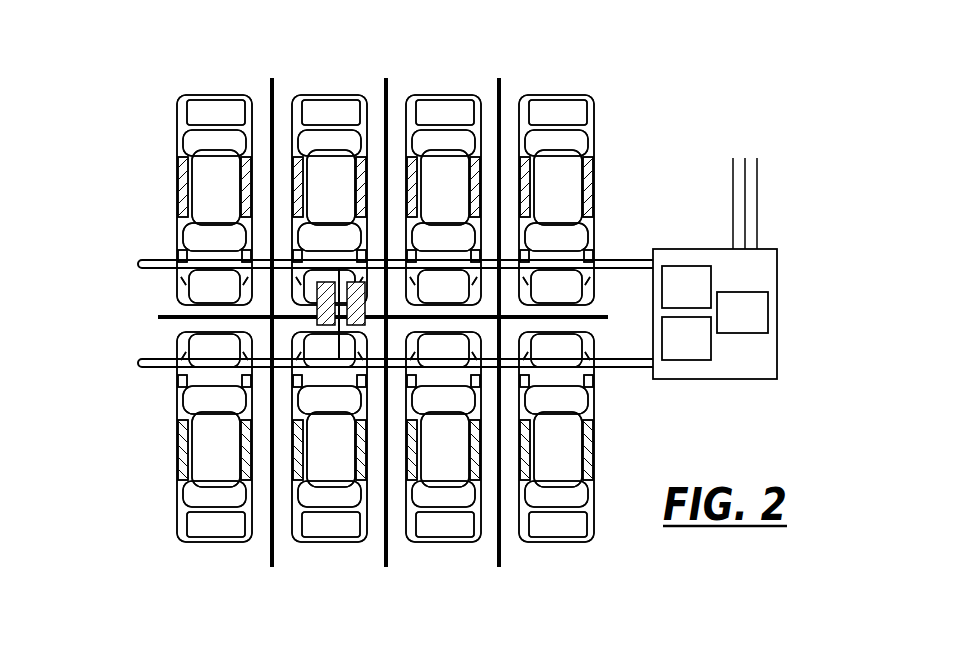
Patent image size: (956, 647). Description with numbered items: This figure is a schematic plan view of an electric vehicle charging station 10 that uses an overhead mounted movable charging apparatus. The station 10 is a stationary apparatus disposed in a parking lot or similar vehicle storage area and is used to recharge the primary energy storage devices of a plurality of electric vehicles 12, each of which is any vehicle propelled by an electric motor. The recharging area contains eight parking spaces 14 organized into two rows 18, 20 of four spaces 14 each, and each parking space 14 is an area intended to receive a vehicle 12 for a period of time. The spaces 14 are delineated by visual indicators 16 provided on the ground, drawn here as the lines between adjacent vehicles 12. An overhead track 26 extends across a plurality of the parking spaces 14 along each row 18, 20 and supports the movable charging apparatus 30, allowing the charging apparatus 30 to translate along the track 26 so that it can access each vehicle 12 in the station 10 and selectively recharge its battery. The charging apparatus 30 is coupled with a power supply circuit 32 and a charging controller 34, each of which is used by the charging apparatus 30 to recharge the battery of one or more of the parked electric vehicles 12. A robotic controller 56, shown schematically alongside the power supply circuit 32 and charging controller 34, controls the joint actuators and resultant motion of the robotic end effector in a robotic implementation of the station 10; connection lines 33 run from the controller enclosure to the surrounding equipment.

The electric vehicle charging station 10 is at (100, 70).
The electric vehicle 12 is at (206, 194).
The vehicle parking space 14 is at (224, 84).
The visual indicator 16 is at (272, 78).
The first row 18 is at (106, 180).
The second row 20 is at (108, 453).
The overhead track 26 is at (137, 264).
The movable charging apparatus 30 is at (317, 320).
The power supply circuit 32 is at (677, 295).
The connection lines 33 is at (766, 170).
The charging controller 34 is at (677, 346).
The robotic controller 56 is at (733, 321).